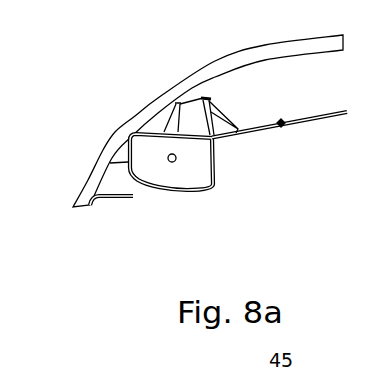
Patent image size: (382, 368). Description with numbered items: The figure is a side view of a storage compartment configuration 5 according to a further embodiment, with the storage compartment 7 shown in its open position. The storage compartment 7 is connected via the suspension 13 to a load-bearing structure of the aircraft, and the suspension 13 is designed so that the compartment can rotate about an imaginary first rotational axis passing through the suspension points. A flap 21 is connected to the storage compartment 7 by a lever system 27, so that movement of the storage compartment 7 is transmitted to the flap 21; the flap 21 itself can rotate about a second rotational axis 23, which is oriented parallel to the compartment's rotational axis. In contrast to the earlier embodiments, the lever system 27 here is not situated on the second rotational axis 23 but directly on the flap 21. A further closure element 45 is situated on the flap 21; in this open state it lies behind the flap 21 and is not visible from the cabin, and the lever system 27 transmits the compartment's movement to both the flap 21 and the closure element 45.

The storage compartment configuration 5 is at (255, 217).
The storage compartment 7 is at (152, 172).
The suspension 13 is at (172, 163).
The flap 21 is at (253, 134).
The second rotational axis 23 is at (282, 127).
The lever system 27 is at (240, 120).
The closure element 45 is at (238, 123).